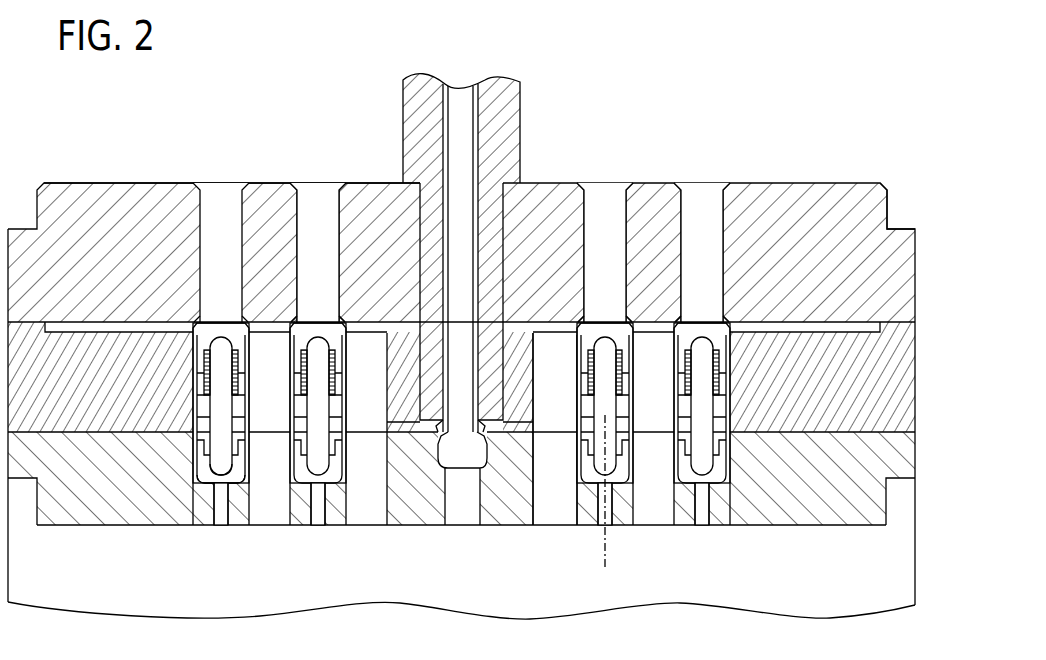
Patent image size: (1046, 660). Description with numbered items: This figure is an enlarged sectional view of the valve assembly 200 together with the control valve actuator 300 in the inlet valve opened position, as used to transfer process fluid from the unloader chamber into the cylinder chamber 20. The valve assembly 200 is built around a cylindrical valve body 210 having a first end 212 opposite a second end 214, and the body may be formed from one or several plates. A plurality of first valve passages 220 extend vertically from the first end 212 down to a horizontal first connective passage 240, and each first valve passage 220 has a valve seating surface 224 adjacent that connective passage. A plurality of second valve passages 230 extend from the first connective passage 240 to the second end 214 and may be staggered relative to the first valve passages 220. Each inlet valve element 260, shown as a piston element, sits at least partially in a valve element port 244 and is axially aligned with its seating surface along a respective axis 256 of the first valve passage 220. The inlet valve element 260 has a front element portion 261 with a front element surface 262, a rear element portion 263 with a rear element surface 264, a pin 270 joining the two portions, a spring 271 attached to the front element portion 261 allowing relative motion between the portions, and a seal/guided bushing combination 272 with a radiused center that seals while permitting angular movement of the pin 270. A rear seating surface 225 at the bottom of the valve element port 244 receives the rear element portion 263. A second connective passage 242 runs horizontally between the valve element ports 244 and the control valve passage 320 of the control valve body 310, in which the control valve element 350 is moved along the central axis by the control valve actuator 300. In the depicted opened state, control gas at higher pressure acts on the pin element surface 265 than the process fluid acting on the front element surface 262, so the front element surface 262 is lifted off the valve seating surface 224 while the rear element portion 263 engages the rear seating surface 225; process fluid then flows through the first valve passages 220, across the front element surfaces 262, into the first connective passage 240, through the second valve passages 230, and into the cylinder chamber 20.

The cylinder chamber 20 is at (747, 582).
The valve assembly 200 is at (830, 163).
The cylindrical valve body 210 is at (85, 181).
The first end 212 is at (148, 182).
The second end 214 is at (68, 498).
The first valve passages 220 is at (221, 183).
The valve seating surface 224 is at (198, 318).
The rear seating surface 225 is at (205, 470).
The second valve passages 230 is at (365, 498).
The first connective passage 240 is at (63, 327).
The second connective passage 242 is at (520, 432).
The valve element port 244 is at (233, 484).
The axis 256 is at (604, 557).
The inlet valve element 260 is at (202, 356).
The front element portion 261 is at (244, 327).
The front element surface 262 is at (228, 325).
The rear element portion 263 is at (210, 482).
The rear element surface 264 is at (222, 484).
The pin element surface 265 is at (207, 458).
The pin 270 is at (222, 445).
The spring 271 is at (205, 381).
The seal/guided bushing combination 272 is at (205, 407).
The control valve actuator 300 is at (378, 89).
The control valve body 310 is at (500, 118).
The control valve passage 320 is at (435, 432).
The control valve element 350 is at (463, 453).